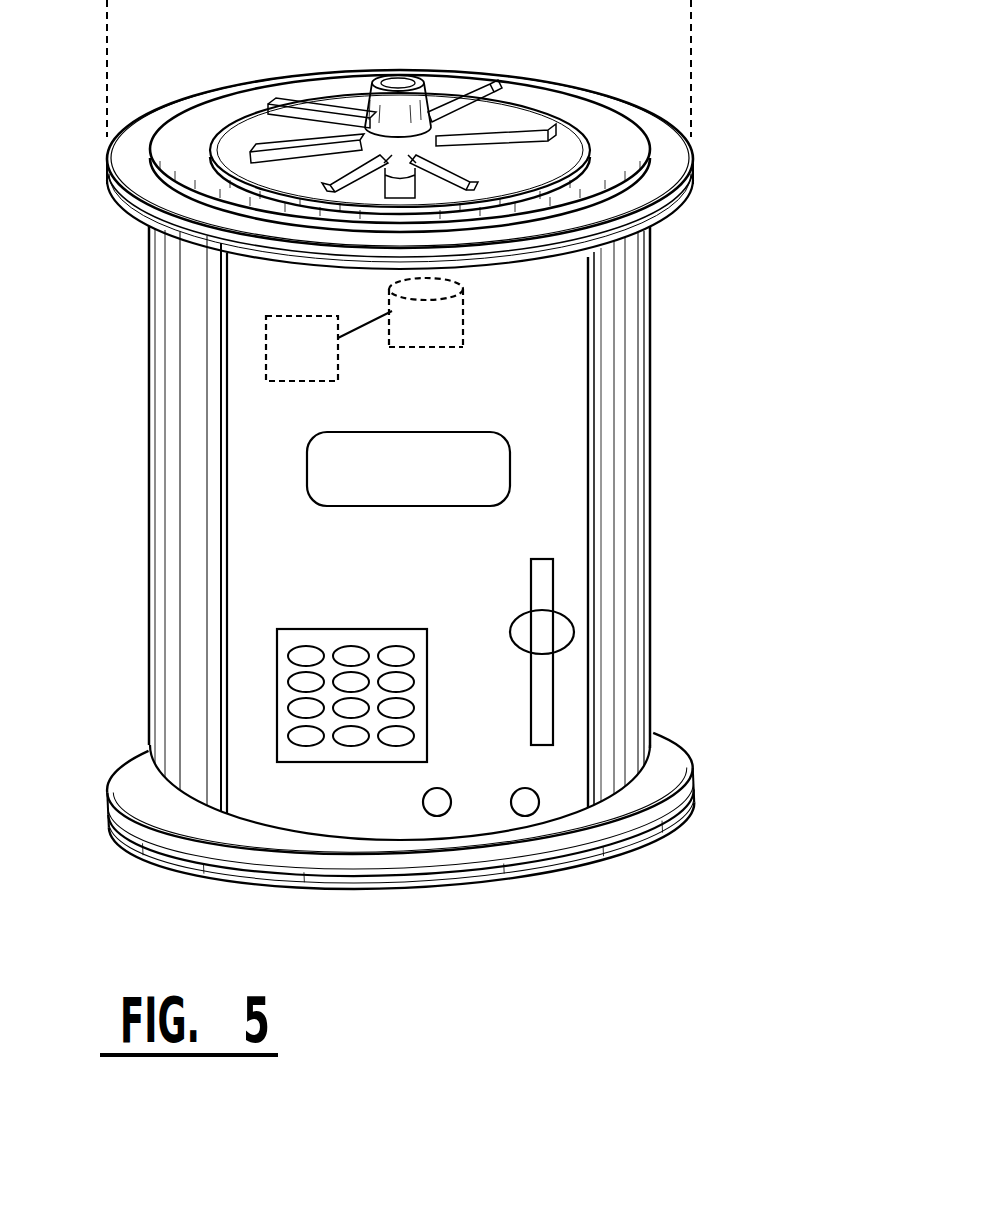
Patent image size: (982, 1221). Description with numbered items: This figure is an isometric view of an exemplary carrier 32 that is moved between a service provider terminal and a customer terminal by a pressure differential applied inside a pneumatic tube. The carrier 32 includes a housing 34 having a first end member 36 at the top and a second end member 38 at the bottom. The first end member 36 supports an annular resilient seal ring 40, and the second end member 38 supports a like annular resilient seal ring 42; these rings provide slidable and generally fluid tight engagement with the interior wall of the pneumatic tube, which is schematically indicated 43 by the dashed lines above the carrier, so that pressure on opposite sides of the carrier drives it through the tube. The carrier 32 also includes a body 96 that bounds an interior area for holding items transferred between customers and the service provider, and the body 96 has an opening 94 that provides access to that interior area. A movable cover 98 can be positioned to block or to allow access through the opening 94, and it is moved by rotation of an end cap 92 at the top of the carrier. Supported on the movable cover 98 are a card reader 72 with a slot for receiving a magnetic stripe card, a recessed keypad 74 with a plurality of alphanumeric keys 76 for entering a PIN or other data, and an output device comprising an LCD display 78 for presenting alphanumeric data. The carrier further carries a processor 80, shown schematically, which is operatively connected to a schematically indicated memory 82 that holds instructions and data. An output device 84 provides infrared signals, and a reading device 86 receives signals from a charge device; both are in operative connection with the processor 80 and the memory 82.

The carrier 32 is at (465, 511).
The housing 34 is at (474, 533).
The first end member 36 is at (456, 173).
The second end member 38 is at (462, 810).
The annular resilient seal ring 40 is at (692, 152).
The annular resilient seal ring 42 is at (690, 810).
The interior wall of the pneumatic tube 43 is at (690, 43).
The card reader 72 is at (513, 660).
The recessed keypad 74 is at (352, 668).
The keys 76 is at (393, 646).
The display 78 is at (445, 453).
The processor 80 is at (293, 382).
The memory 82 is at (463, 315).
The output device 84 is at (428, 816).
The reading device 86 is at (528, 816).
The end cap 92 is at (437, 96).
The opening 94 is at (598, 452).
The body 96 is at (655, 490).
The movable cover 98 is at (423, 640).